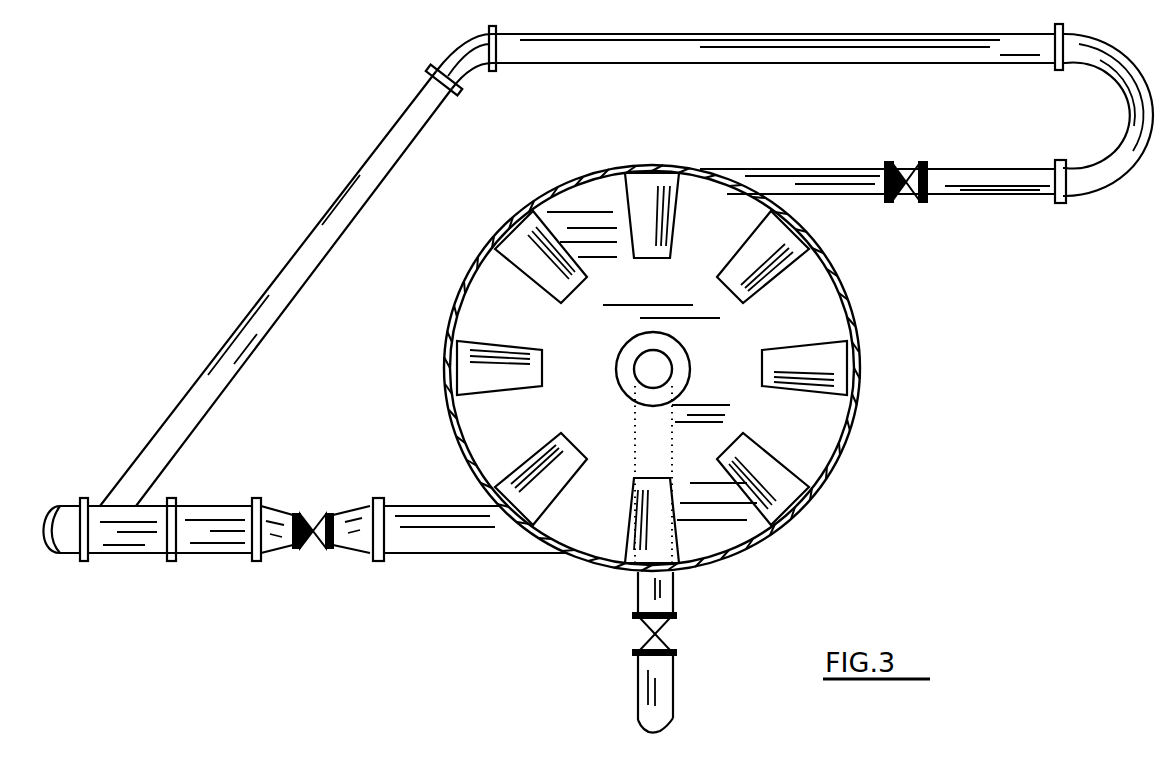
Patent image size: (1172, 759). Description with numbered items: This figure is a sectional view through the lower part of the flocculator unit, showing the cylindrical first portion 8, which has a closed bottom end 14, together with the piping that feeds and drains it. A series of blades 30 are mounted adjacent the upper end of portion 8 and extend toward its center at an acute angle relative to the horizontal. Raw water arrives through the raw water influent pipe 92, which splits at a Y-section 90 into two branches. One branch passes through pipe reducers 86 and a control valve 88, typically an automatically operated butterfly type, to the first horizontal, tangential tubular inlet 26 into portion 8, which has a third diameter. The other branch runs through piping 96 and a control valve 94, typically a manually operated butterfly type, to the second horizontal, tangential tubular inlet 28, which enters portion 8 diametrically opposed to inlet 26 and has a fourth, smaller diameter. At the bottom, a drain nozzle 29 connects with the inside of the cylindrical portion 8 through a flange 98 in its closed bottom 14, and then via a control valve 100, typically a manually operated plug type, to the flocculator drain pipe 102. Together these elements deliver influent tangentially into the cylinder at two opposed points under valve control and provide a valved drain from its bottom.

The first portion 8 is at (847, 422).
The closed bottom end 14 is at (622, 368).
The first horizontal tangential tubular inlet 26 is at (485, 540).
The second horizontal tangential tubular inlet 28 is at (783, 170).
The drain nozzle 29 is at (673, 602).
The blades 30 is at (573, 288).
The pipe reducers 86 is at (276, 507).
The control valve 88 is at (318, 550).
The Y-section 90 is at (97, 548).
The raw water influent pipe 92 is at (60, 525).
The control valve 94 is at (906, 202).
The piping 96 is at (820, 50).
The flange 98 is at (633, 386).
The control valve 100 is at (648, 637).
The flocculator drain pipe 102 is at (663, 680).